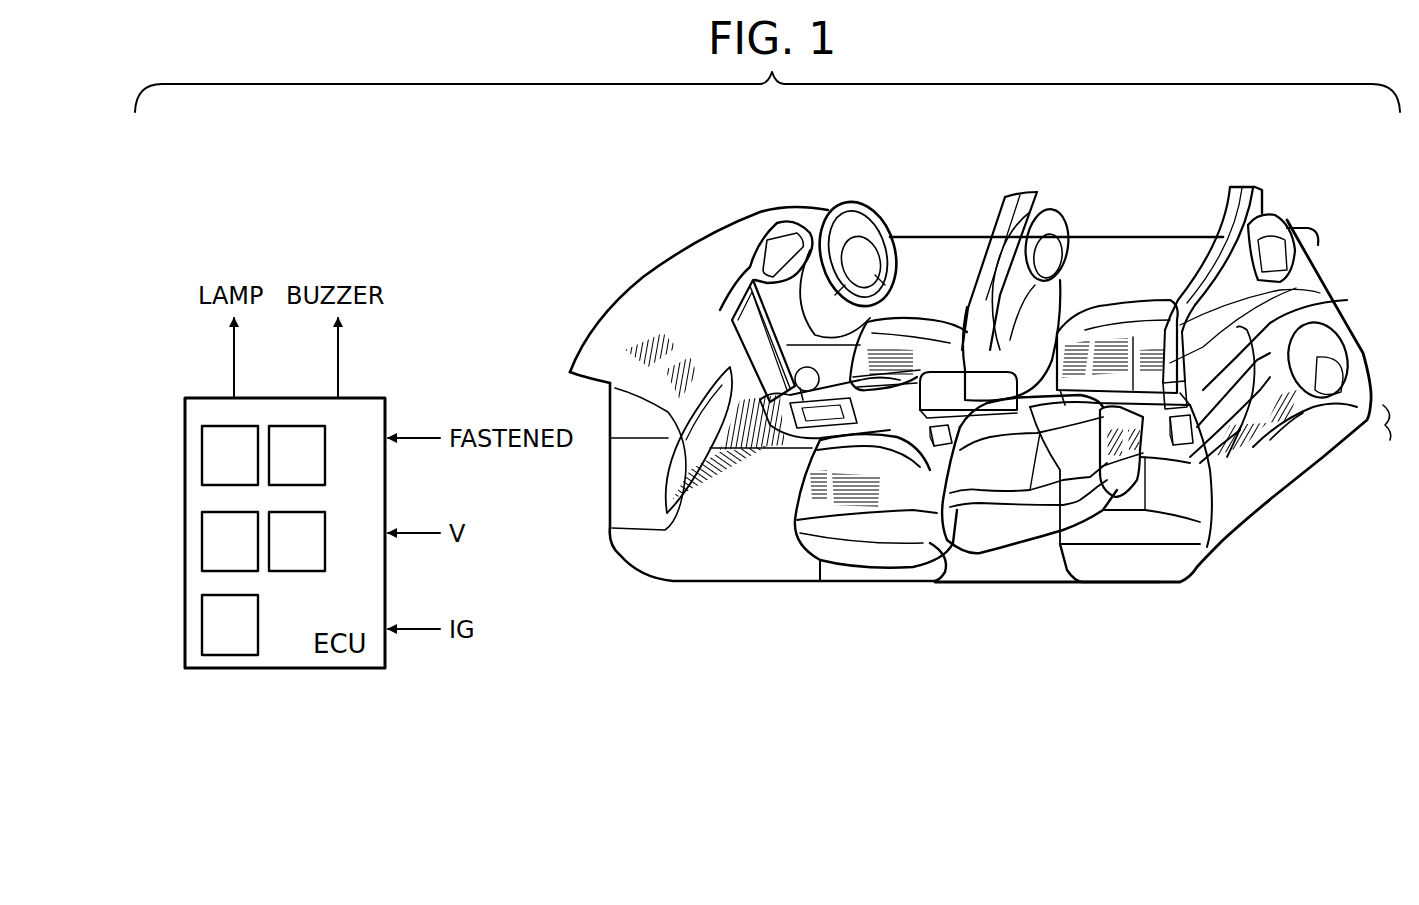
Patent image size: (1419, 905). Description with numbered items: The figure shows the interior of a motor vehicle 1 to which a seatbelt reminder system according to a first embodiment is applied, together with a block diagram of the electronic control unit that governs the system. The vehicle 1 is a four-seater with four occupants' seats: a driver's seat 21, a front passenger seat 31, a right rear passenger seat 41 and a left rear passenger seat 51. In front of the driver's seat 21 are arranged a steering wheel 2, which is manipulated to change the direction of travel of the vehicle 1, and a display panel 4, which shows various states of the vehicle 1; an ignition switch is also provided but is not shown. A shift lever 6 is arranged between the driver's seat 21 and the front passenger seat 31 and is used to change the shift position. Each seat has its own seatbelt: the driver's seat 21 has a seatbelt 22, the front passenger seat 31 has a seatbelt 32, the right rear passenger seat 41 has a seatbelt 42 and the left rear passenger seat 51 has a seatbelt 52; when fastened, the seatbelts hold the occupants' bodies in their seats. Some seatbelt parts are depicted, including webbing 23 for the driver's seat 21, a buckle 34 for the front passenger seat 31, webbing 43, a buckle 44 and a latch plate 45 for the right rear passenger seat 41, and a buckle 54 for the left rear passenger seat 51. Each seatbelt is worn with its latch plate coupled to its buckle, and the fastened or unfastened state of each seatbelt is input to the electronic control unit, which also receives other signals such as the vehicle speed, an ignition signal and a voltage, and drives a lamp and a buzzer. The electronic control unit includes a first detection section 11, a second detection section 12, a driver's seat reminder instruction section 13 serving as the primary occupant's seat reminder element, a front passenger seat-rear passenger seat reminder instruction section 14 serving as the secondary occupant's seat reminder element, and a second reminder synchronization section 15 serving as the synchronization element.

The vehicle 1 is at (608, 228).
The steering wheel 2 is at (855, 215).
The display panel 4 is at (793, 224).
The shift lever 6 is at (810, 377).
The first detection section 11 is at (216, 436).
The second detection section 12 is at (293, 436).
The driver's seat reminder instruction section 13 is at (208, 525).
The front passenger seat-rear passenger seat reminder instruction section 14 is at (281, 565).
The second reminder synchronization section 15 is at (208, 611).
The driver's seat 21 is at (992, 275).
The seatbelt 22 is at (1000, 197).
The webbing 23 is at (1022, 200).
The front passenger seat 31 is at (873, 500).
The seatbelt 32 is at (958, 448).
The buckle 34 is at (930, 445).
The right rear passenger seat 41 is at (1233, 272).
The seatbelt 42 is at (1172, 265).
The webbing 43 is at (1245, 192).
The buckle 44 is at (1320, 293).
The latch plate 45 is at (1296, 288).
The left rear passenger seat 51 is at (1245, 443).
The seatbelt 52 is at (1193, 462).
The buckle 54 is at (1172, 445).